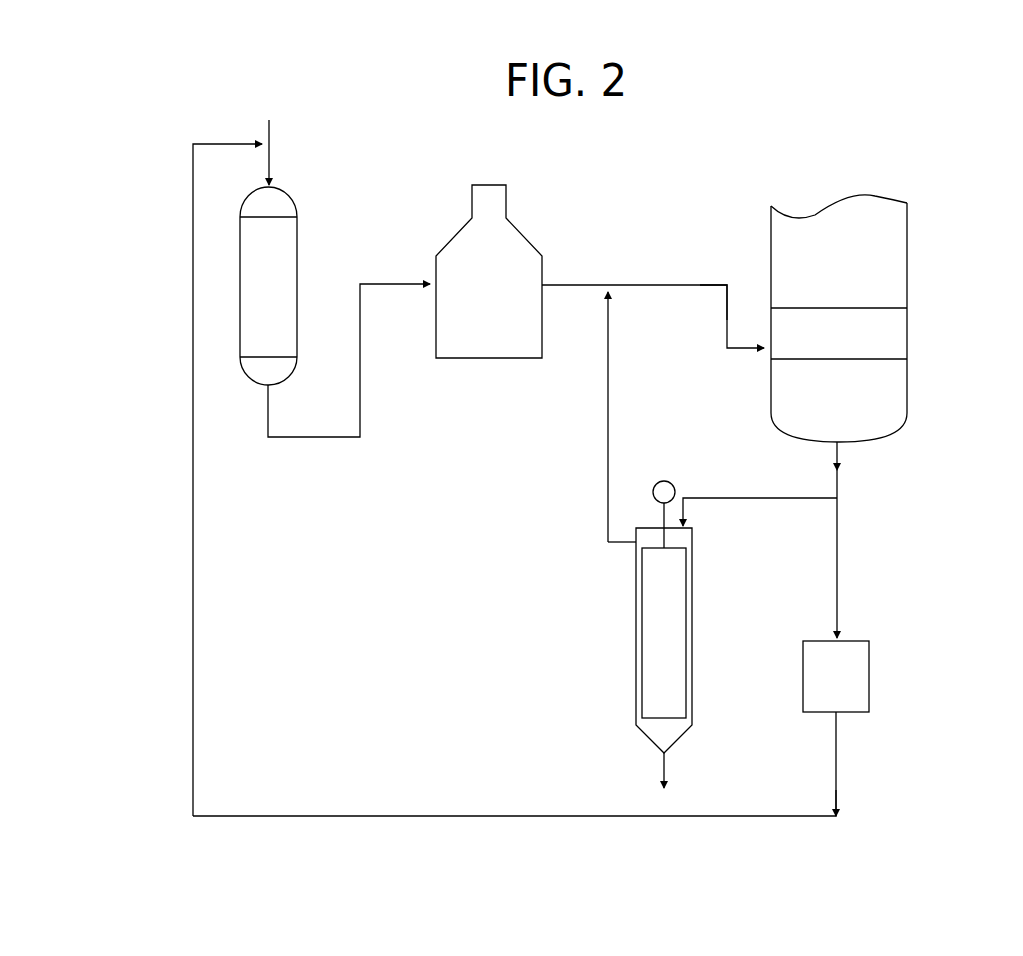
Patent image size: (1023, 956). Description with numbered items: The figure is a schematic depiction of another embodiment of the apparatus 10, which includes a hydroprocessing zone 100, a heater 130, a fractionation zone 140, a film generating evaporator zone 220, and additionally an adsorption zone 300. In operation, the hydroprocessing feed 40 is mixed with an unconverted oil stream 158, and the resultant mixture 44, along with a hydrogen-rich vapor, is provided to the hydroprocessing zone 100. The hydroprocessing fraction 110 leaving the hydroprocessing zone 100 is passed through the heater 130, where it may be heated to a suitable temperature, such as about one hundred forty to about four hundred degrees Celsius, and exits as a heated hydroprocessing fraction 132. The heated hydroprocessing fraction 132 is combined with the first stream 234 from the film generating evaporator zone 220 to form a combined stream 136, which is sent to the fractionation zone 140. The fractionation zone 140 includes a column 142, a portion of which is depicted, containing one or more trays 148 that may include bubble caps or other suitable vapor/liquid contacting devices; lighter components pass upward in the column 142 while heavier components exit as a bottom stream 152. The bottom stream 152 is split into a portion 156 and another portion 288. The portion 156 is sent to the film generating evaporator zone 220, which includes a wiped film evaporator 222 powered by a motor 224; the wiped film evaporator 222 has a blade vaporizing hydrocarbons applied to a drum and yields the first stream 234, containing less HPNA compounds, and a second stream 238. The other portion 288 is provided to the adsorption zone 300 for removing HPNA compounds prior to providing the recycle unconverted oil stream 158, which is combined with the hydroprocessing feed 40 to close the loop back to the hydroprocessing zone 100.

The apparatus 10 is at (145, 145).
The hydroprocessing feed 40 is at (272, 131).
The resultant mixture 44 is at (272, 152).
The hydroprocessing zone 100 is at (298, 255).
The hydroprocessing fraction 110 is at (390, 290).
The heater 130 is at (455, 232).
The heated hydroprocessing fraction 132 is at (565, 285).
The combined stream 136 is at (707, 287).
The fractionation zone 140 is at (908, 242).
The column 142 is at (862, 262).
The trays 148 is at (893, 308).
The bottom stream 152 is at (840, 448).
The portion 156 is at (763, 498).
The unconverted oil stream 158 is at (422, 816).
The film generating evaporator zone 220 is at (636, 637).
The wiped film evaporator 222 is at (684, 609).
The motor 224 is at (653, 482).
The first stream 234 is at (613, 398).
The second stream 238 is at (660, 757).
The another portion 288 is at (840, 520).
The adsorption zone 300 is at (853, 640).